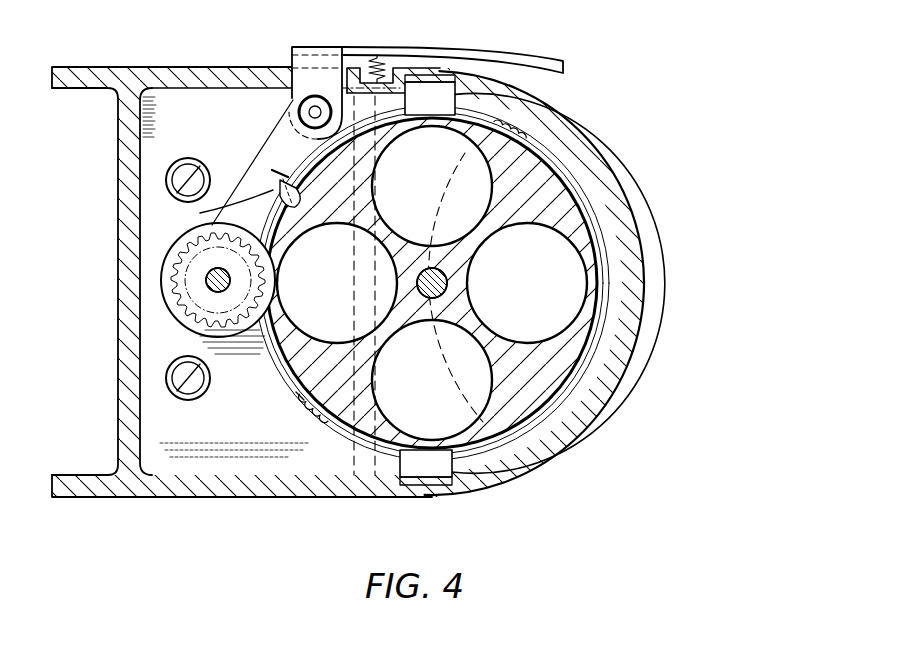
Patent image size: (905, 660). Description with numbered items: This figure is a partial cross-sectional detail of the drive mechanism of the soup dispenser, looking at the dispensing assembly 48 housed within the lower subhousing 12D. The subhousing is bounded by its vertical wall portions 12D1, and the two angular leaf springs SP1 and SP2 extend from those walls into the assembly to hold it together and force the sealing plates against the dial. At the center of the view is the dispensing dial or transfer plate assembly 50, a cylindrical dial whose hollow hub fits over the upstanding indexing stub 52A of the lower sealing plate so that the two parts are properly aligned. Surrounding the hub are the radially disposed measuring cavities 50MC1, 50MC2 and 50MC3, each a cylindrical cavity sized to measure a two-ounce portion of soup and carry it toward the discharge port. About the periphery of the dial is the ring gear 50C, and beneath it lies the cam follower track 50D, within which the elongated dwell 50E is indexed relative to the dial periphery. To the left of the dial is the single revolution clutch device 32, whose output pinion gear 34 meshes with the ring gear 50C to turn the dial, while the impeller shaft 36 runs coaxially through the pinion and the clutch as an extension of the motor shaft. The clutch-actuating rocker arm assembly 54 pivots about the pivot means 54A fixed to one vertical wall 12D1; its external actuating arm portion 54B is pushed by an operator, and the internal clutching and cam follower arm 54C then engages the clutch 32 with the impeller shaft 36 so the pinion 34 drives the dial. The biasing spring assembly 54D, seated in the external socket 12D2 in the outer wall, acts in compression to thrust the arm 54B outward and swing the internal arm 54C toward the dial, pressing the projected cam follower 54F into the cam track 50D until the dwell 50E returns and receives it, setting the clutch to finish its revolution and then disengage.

The lower subhousing 12D is at (597, 429).
The vertical wall portion 12D1 is at (195, 72).
The external socket 12D2 is at (392, 72).
The single revolution clutch device 32 is at (200, 269).
The output pinion gear 34 is at (215, 327).
The impeller shaft 36 is at (258, 343).
The dispensing assembly 48 is at (222, 432).
The dispensing dial or transfer plate assembly 50 is at (538, 178).
The ring gear 50C is at (322, 418).
The cam follower track 50D is at (293, 380).
The elongated dwell 50E is at (325, 256).
The measuring cavity 50MC1 is at (372, 305).
The measuring cavity 50MC2 is at (462, 196).
The measuring cavity 50MC3 is at (577, 308).
The indexing stub 52A is at (449, 279).
The clutch-actuating rocker arm assembly 54 is at (271, 110).
The pivot means 54A is at (313, 104).
The external actuating arm portion 54B is at (513, 55).
The internal clutching and cam follower arm 54C is at (272, 176).
The biasing spring assembly 54D is at (378, 57).
The projected cam follower 54F is at (200, 213).
The angular leaf spring SP1 is at (437, 486).
The angular leaf spring SP2 is at (443, 74).